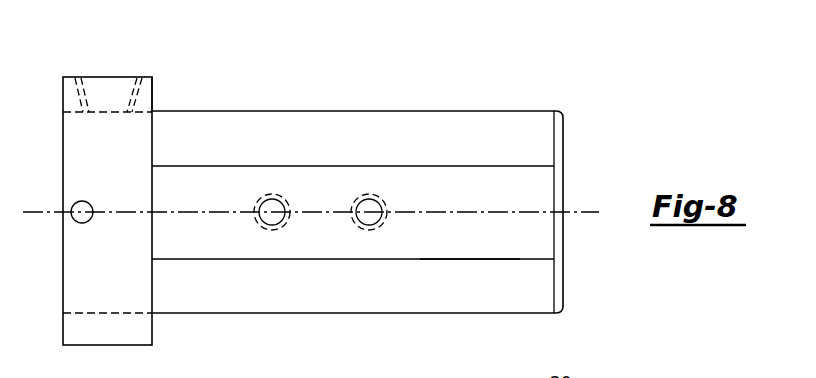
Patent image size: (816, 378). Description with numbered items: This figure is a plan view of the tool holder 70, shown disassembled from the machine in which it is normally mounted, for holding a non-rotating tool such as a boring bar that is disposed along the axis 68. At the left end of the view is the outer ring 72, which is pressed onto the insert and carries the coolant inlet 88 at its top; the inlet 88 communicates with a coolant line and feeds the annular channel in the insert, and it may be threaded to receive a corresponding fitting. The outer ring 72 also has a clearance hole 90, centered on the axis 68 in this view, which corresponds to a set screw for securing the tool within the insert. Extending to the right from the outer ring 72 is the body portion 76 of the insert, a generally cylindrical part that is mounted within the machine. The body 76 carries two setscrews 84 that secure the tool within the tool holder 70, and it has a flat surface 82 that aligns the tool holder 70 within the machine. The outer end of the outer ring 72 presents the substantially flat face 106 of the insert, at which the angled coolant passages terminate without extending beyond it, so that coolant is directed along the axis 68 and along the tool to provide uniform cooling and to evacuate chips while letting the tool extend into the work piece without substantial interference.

The axis 68 is at (40, 212).
The tool holder 70 is at (329, 334).
The outer ring 72 is at (153, 98).
The body portion 76 is at (255, 118).
The flat surface 82 is at (484, 244).
The setscrews 84 is at (367, 220).
The coolant inlet 88 is at (107, 77).
The clearance hole 90 is at (82, 223).
The face 106 is at (62, 152).